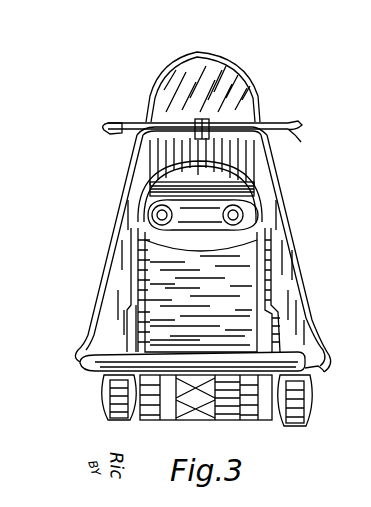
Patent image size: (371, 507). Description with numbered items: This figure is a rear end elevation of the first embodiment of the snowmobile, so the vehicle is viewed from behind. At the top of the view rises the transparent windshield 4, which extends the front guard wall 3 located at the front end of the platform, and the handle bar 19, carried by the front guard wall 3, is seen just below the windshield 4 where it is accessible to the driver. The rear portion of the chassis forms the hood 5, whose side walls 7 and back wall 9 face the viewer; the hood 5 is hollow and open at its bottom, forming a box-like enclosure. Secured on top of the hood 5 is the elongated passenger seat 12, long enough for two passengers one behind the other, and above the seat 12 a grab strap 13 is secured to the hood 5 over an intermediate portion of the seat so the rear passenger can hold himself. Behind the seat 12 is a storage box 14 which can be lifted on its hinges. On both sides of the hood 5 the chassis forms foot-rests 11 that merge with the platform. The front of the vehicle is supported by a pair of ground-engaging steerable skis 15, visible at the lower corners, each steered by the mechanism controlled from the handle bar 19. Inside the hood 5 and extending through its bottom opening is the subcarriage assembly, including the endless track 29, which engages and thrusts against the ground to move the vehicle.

The front guard wall 3 is at (262, 165).
The transparent windshield 4 is at (250, 74).
The hood 5 is at (290, 254).
The side walls 7 is at (138, 274).
The back wall 9 is at (256, 284).
The foot-rests 11 is at (82, 348).
The passenger seat 12 is at (258, 200).
The grab strap 13 is at (258, 182).
The storage box 14 is at (262, 235).
The ski 15 is at (100, 412).
The handle bar 19 is at (292, 127).
The endless track 29 is at (234, 422).